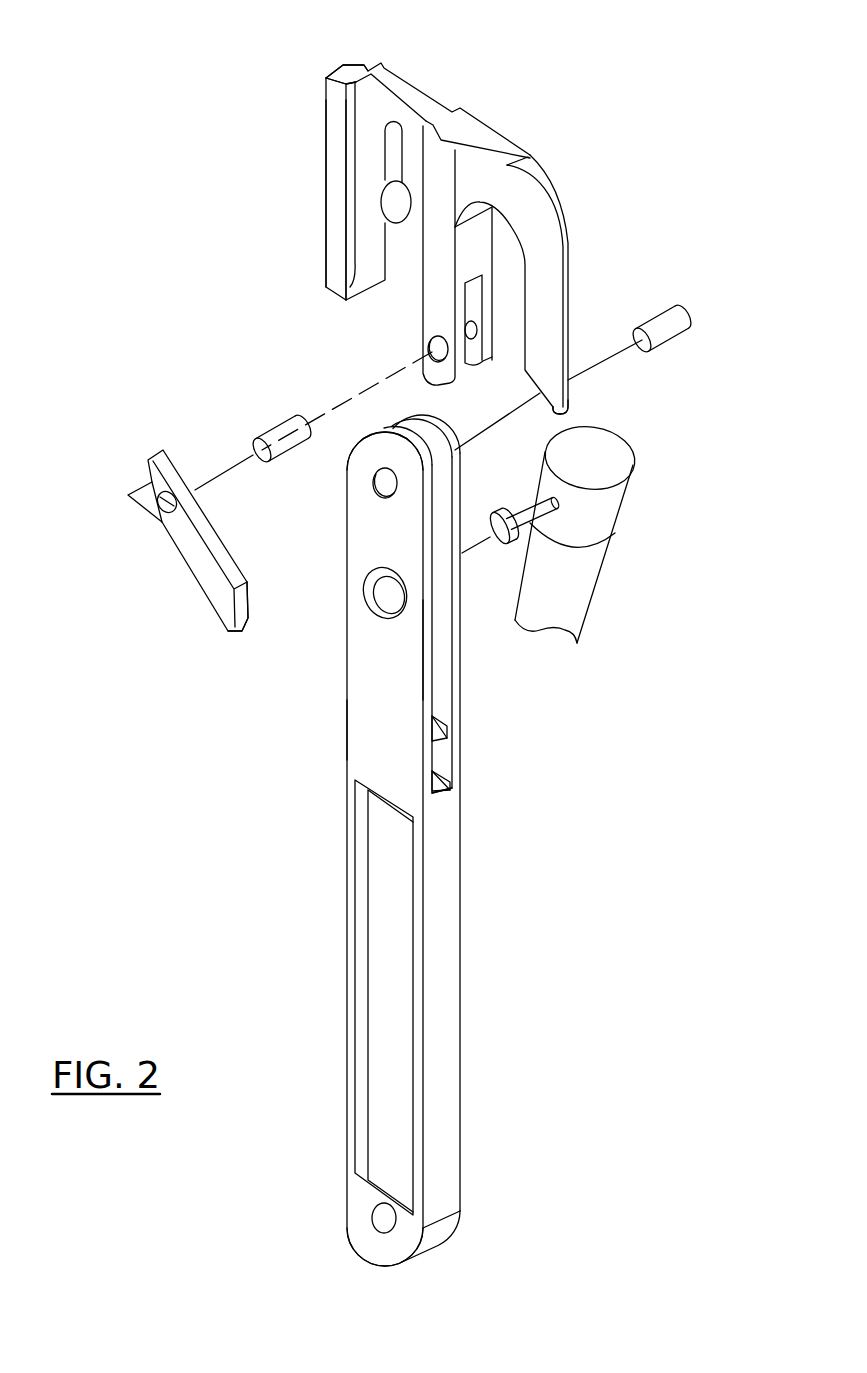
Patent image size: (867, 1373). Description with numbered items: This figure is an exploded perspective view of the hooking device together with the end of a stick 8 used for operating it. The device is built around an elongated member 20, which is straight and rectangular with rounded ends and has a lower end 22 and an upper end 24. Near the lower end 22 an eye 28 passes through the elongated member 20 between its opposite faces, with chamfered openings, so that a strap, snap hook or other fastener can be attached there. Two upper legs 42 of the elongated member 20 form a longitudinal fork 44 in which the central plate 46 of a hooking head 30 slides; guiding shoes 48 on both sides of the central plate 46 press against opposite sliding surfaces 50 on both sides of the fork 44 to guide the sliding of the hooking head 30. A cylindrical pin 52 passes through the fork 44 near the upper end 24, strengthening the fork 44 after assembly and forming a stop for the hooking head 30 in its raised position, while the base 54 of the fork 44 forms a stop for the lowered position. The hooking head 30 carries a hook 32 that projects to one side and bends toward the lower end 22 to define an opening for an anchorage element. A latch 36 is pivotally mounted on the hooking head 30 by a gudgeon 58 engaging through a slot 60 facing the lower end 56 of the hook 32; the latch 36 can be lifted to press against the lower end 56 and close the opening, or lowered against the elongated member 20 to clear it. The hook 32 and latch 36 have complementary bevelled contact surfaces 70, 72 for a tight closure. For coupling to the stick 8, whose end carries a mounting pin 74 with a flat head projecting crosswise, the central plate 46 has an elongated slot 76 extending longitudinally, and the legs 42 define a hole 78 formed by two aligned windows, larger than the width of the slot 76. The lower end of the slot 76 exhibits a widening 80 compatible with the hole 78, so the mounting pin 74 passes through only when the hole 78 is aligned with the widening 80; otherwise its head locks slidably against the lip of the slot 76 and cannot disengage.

The stick 8 is at (568, 603).
The elongated member 20 is at (462, 993).
The lower end 22 is at (477, 1236).
The upper end 24 is at (328, 480).
The eye 28 is at (384, 1218).
The hooking head 30 is at (558, 141).
The hook 32 is at (540, 183).
The latch 36 is at (205, 582).
The upper legs 42 is at (412, 755).
The fork 44 is at (480, 678).
The central plate 46 is at (368, 102).
The guiding shoes 48 is at (422, 315).
The sliding surfaces 50 is at (453, 615).
The pin 52 is at (679, 314).
The base of the fork 54 is at (444, 788).
The lower end of the hook 56 is at (577, 405).
The gudgeon 58 is at (261, 444).
The slot 60 is at (480, 380).
The contact surface 70 is at (550, 412).
The contact surface 72 is at (243, 632).
The mounting pin 74 is at (612, 534).
The elongated slot 76 is at (408, 140).
The hole 78 is at (388, 612).
The widening 80 is at (388, 207).